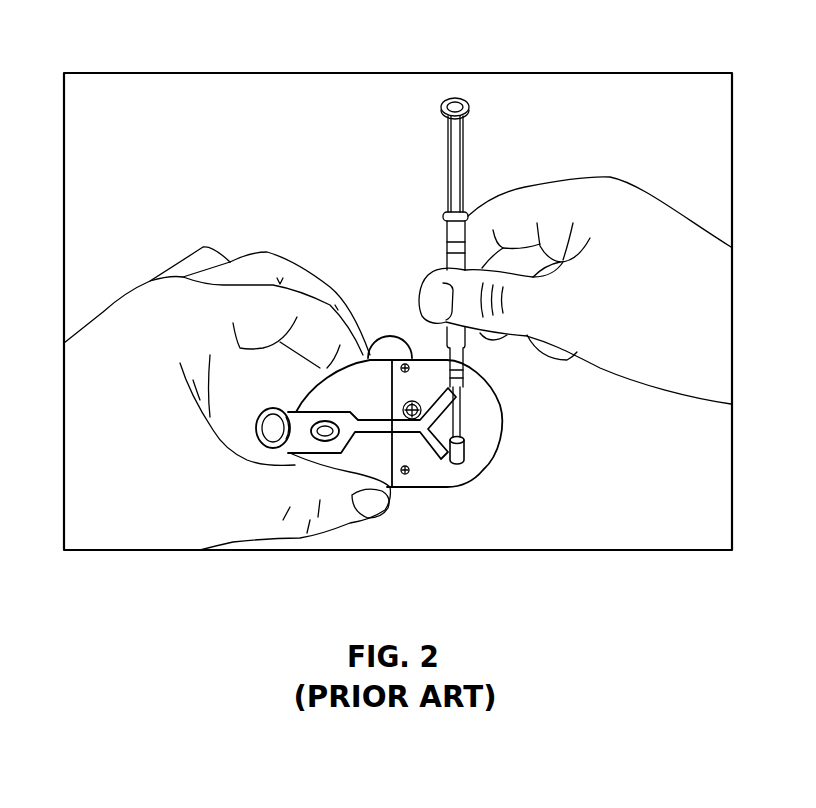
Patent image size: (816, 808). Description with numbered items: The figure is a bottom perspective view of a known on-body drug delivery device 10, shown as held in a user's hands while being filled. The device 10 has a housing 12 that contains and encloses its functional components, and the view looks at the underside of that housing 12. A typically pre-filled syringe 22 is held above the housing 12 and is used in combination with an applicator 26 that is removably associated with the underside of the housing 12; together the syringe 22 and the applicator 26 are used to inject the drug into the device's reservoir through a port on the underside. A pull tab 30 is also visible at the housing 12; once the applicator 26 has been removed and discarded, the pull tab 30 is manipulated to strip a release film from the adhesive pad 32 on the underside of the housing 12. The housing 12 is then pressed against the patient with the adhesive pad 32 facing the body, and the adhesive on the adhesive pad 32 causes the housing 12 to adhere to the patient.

The on-body device 10 is at (429, 435).
The housing 12 is at (408, 488).
The syringe 22 is at (463, 160).
The applicator 26 is at (467, 453).
The pull tab 30 is at (383, 347).
The adhesive pad 32 is at (432, 465).